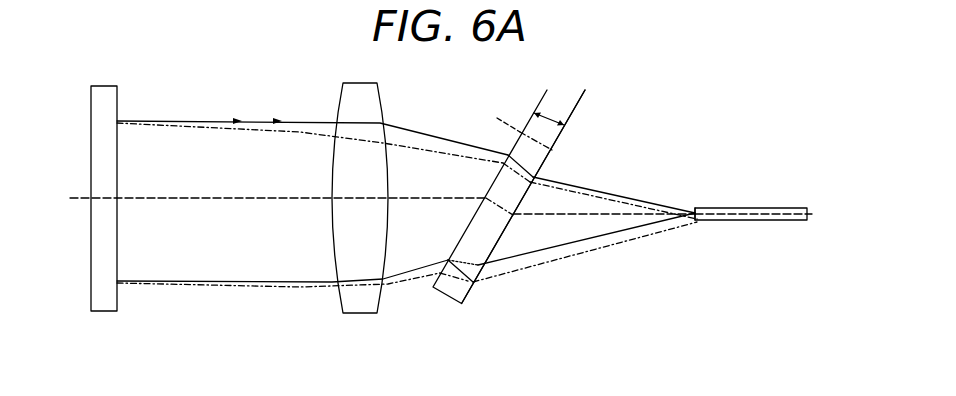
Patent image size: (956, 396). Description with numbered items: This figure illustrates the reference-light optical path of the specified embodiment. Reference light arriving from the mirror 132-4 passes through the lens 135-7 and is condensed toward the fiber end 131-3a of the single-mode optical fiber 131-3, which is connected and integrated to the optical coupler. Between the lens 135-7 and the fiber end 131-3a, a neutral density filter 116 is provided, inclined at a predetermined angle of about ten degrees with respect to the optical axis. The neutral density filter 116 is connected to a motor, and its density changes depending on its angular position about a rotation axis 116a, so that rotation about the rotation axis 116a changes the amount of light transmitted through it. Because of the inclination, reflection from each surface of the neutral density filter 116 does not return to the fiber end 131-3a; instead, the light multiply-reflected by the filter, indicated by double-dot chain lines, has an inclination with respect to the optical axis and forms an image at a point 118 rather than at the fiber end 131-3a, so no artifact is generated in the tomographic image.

The mirror 132-4 is at (104, 312).
The lens 135-7 is at (360, 314).
The neutral density filter 116 is at (467, 293).
The rotation axis 116a is at (562, 157).
The point 118 is at (699, 226).
The single-mode optical fiber 131-3 is at (774, 221).
The fiber end 131-3a is at (690, 207).